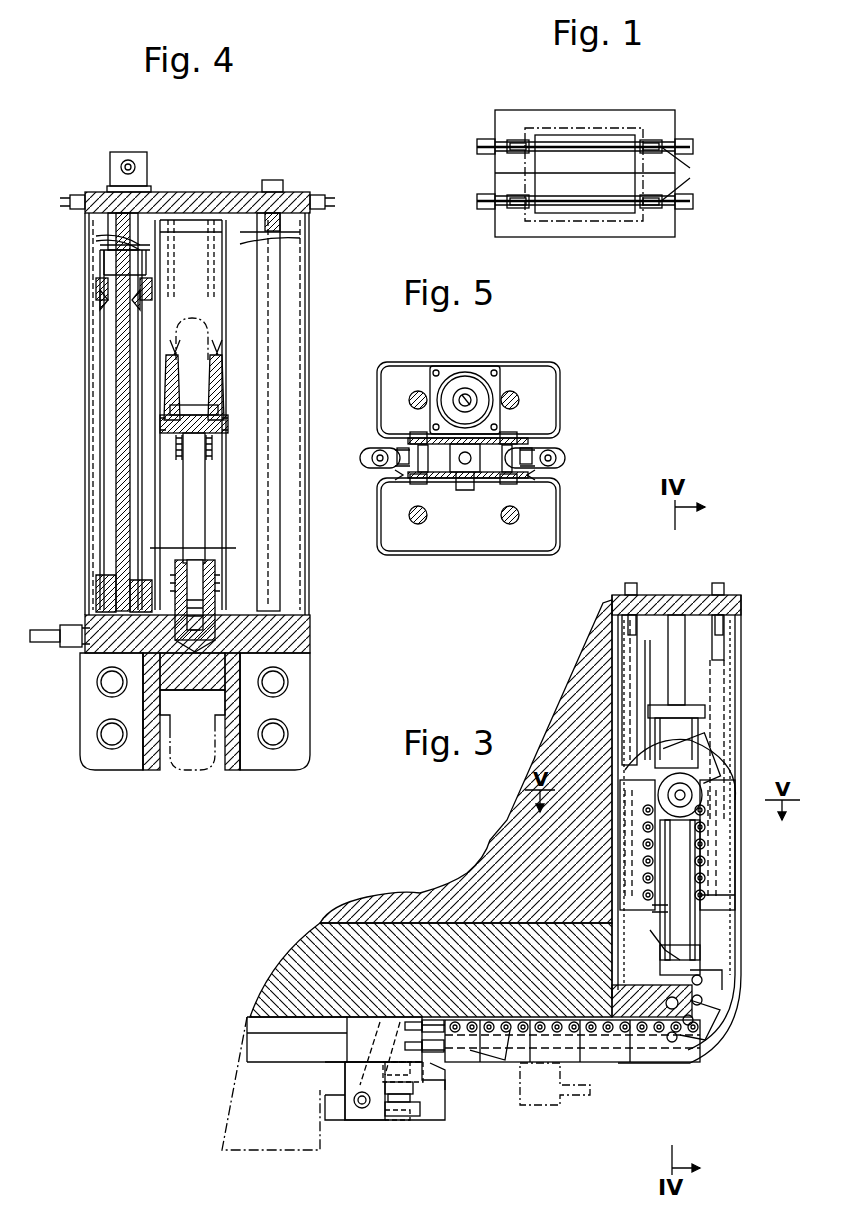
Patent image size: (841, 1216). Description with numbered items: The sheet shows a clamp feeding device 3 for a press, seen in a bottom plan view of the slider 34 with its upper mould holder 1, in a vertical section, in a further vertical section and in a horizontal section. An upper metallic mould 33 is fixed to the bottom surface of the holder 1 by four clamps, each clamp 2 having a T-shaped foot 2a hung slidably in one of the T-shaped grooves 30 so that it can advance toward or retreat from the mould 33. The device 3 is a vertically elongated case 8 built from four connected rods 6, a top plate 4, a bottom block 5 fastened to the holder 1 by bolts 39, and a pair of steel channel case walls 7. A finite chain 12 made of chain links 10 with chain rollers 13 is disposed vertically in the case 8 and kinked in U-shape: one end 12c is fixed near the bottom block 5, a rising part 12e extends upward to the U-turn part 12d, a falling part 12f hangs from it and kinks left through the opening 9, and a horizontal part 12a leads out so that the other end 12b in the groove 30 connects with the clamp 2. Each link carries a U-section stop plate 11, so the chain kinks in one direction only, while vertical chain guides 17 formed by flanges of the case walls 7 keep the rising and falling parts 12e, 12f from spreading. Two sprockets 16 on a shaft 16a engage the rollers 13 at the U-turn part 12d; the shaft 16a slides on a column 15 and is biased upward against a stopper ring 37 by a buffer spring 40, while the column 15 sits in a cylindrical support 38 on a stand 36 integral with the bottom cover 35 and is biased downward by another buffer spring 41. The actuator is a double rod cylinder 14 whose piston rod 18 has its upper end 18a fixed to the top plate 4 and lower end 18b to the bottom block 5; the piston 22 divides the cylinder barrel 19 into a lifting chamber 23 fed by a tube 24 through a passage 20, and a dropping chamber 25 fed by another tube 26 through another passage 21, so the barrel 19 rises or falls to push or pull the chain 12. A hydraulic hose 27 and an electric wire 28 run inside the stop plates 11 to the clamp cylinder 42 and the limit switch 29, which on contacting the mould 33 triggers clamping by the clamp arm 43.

In FIG. 1, the upper mould holder 1 is at (665, 112).
In FIG. 3, the upper mould holder 1 is at (295, 962).
In FIG. 1, the clamp 2 is at (513, 140).
In FIG. 3, the clamp 2 is at (368, 1125).
In FIG. 3, the T-shaped foot 2a is at (355, 1020).
In FIG. 4, the device 3 is at (288, 180).
In FIG. 1, the device 3 is at (475, 148).
In FIG. 5, the device 3 is at (545, 362).
In FIG. 3, the device 3 is at (743, 588).
In FIG. 4, the top plate 4 is at (228, 192).
In FIG. 3, the top plate 4 is at (698, 598).
In FIG. 4, the bottom block 5 is at (305, 634).
In FIG. 5, the bottom block 5 is at (545, 540).
In FIG. 3, the bottom block 5 is at (612, 1000).
In FIG. 4, the rods 6 is at (280, 265).
In FIG. 5, the rods 6 is at (410, 398).
In FIG. 3, the rods 6 is at (622, 630).
In FIG. 4, the case walls 7 is at (88, 524).
In FIG. 5, the case walls 7 is at (405, 555).
In FIG. 3, the case walls 7 is at (625, 790).
In FIG. 4, the case 8 is at (306, 372).
In FIG. 1, the case 8 is at (683, 210).
In FIG. 5, the case 8 is at (560, 386).
In FIG. 3, the case 8 is at (742, 773).
In FIG. 4, the opening 9 is at (210, 712).
In FIG. 3, the opening 9 is at (610, 1065).
In FIG. 5, the chain links 10 is at (424, 470).
In FIG. 3, the chain links 10 is at (695, 880).
In FIG. 5, the stop plate 11 is at (378, 466).
In FIG. 3, the stop plate 11 is at (708, 862).
In FIG. 4, the chain 12 is at (213, 326).
In FIG. 5, the chain 12 is at (365, 456).
In FIG. 3, the chain 12 is at (720, 880).
In FIG. 3, the horizontal part 12a is at (505, 1060).
In FIG. 3, the another end of chain 12b is at (438, 1020).
In FIG. 3, the one end of chain 12c is at (670, 906).
In FIG. 3, the U-turn part 12d is at (712, 750).
In FIG. 3, the rising part 12e is at (640, 865).
In FIG. 3, the falling part 12f is at (710, 905).
In FIG. 5, the chain rollers 13 is at (403, 466).
In FIG. 3, the chain rollers 13 is at (658, 845).
In FIG. 4, the double rod cylinder 14 is at (100, 430).
In FIG. 5, the double rod cylinder 14 is at (452, 368).
In FIG. 3, the double rod cylinder 14 is at (688, 740).
In FIG. 4, the column 15 is at (196, 524).
In FIG. 5, the column 15 is at (480, 478).
In FIG. 3, the column 15 is at (695, 930).
In FIG. 4, the sprockets 16 is at (210, 400).
In FIG. 5, the sprockets 16 is at (430, 440).
In FIG. 3, the sprockets 16 is at (668, 815).
In FIG. 4, the shaft 16a is at (220, 430).
In FIG. 5, the shaft 16a is at (468, 480).
In FIG. 3, the shaft 16a is at (668, 803).
In FIG. 4, the chain guides 17 is at (175, 295).
In FIG. 5, the chain guides 17 is at (400, 362).
In FIG. 3, the chain guides 17 is at (642, 700).
In FIG. 4, the piston rod 18 is at (116, 378).
In FIG. 5, the piston rod 18 is at (470, 408).
In FIG. 3, the piston rod 18 is at (672, 640).
In FIG. 4, the upper end of piston rod 18a is at (135, 205).
In FIG. 4, the lower end of piston rod 18b is at (100, 605).
In FIG. 4, the cylinder barrel 19 is at (100, 347).
In FIG. 5, the cylinder barrel 19 is at (435, 378).
In FIG. 3, the cylinder barrel 19 is at (665, 740).
In FIG. 4, the passage 20 is at (100, 255).
In FIG. 4, the another passage 21 is at (138, 465).
In FIG. 4, the piston 22 is at (100, 300).
In FIG. 4, the lifting chamber 23 is at (152, 288).
In FIG. 4, the tube 24 is at (130, 162).
In FIG. 4, the dropping chamber 25 is at (204, 543).
In FIG. 4, the another tube 26 is at (50, 642).
In FIG. 5, the hydraulic hose 27 is at (372, 456).
In FIG. 3, the hydraulic hose 27 is at (722, 990).
In FIG. 5, the electric wire 28 is at (393, 470).
In FIG. 3, the electric wire 28 is at (404, 1022).
In FIG. 3, the limit switch 29 is at (378, 1022).
In FIG. 1, the T-shaped grooves 30 is at (688, 174).
In FIG. 3, the T-shaped grooves 30 is at (300, 1025).
In FIG. 1, the upper metallic mould 33 is at (587, 218).
In FIG. 3, the upper metallic mould 33 is at (280, 1140).
In FIG. 3, the slider 34 is at (475, 880).
In FIG. 4, the bottom cover 35 is at (96, 590).
In FIG. 4, the stand 36 is at (218, 577).
In FIG. 4, the stopper ring 37 is at (186, 410).
In FIG. 4, the cylindrical support 38 is at (215, 562).
In FIG. 4, the bolts 39 is at (288, 682).
In FIG. 4, the buffer spring 40 is at (205, 450).
In FIG. 4, the another buffer spring 41 is at (215, 610).
In FIG. 3, the clamp cylinder 42 is at (410, 1078).
In FIG. 3, the clamp arm 43 is at (395, 1112).